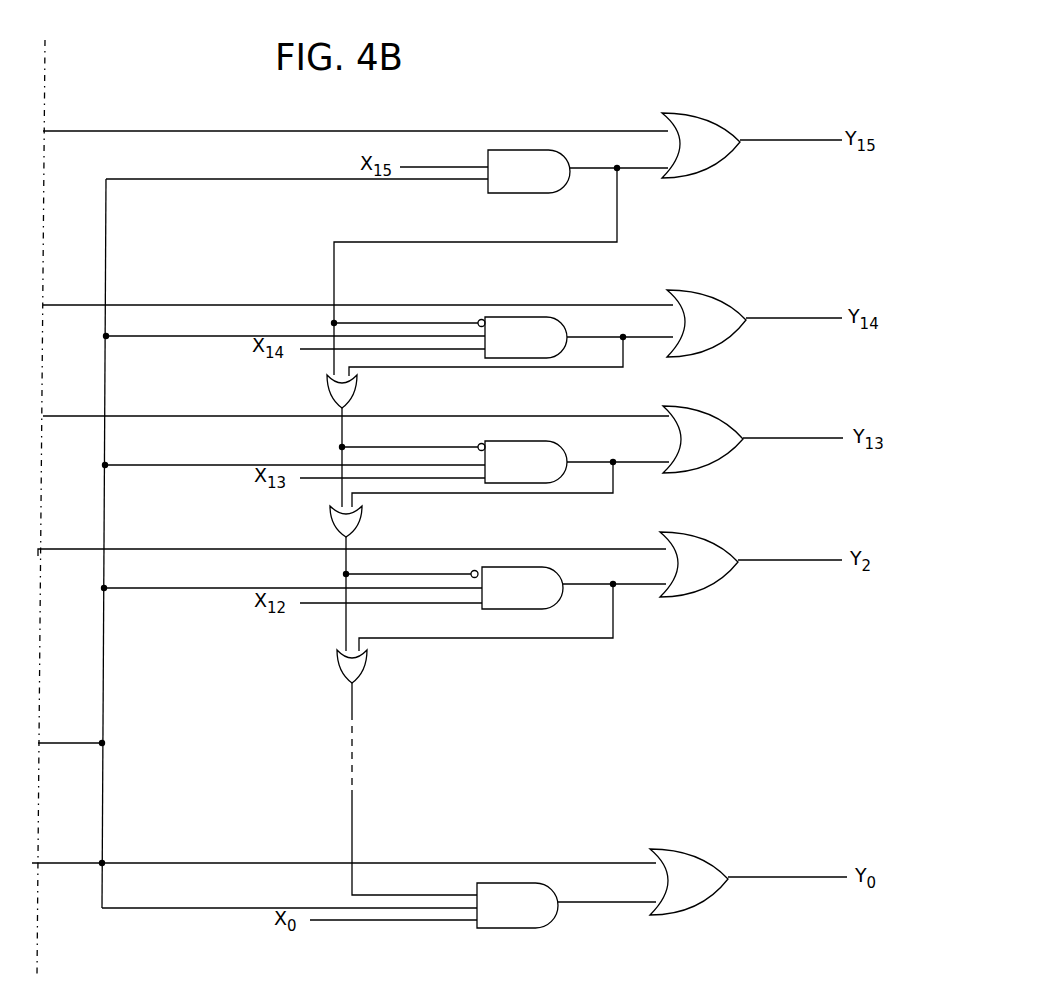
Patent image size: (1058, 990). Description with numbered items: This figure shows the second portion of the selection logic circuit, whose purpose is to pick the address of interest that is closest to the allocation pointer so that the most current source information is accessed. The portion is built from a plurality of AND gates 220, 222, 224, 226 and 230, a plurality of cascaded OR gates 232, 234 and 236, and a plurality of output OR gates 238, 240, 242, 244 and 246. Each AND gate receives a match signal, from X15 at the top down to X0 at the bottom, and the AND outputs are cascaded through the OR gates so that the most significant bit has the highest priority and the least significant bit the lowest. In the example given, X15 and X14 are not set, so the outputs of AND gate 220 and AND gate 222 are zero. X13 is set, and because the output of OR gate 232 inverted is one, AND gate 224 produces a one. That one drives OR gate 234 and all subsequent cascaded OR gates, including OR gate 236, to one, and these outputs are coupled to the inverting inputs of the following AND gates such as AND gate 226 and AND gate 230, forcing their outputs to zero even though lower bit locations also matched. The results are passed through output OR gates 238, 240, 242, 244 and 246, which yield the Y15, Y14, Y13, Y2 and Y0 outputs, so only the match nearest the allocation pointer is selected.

The AND gate 220 is at (520, 193).
The AND gate 222 is at (570, 331).
The AND gate 224 is at (565, 452).
The AND gate 226 is at (560, 597).
The AND gate 230 is at (543, 925).
The OR gate 232 is at (357, 392).
The OR gate 234 is at (357, 518).
The OR gate 236 is at (367, 668).
The OR gate 238 is at (753, 100).
The OR gate 240 is at (730, 303).
The OR gate 242 is at (732, 423).
The OR gate 244 is at (725, 542).
The OR gate 246 is at (713, 860).